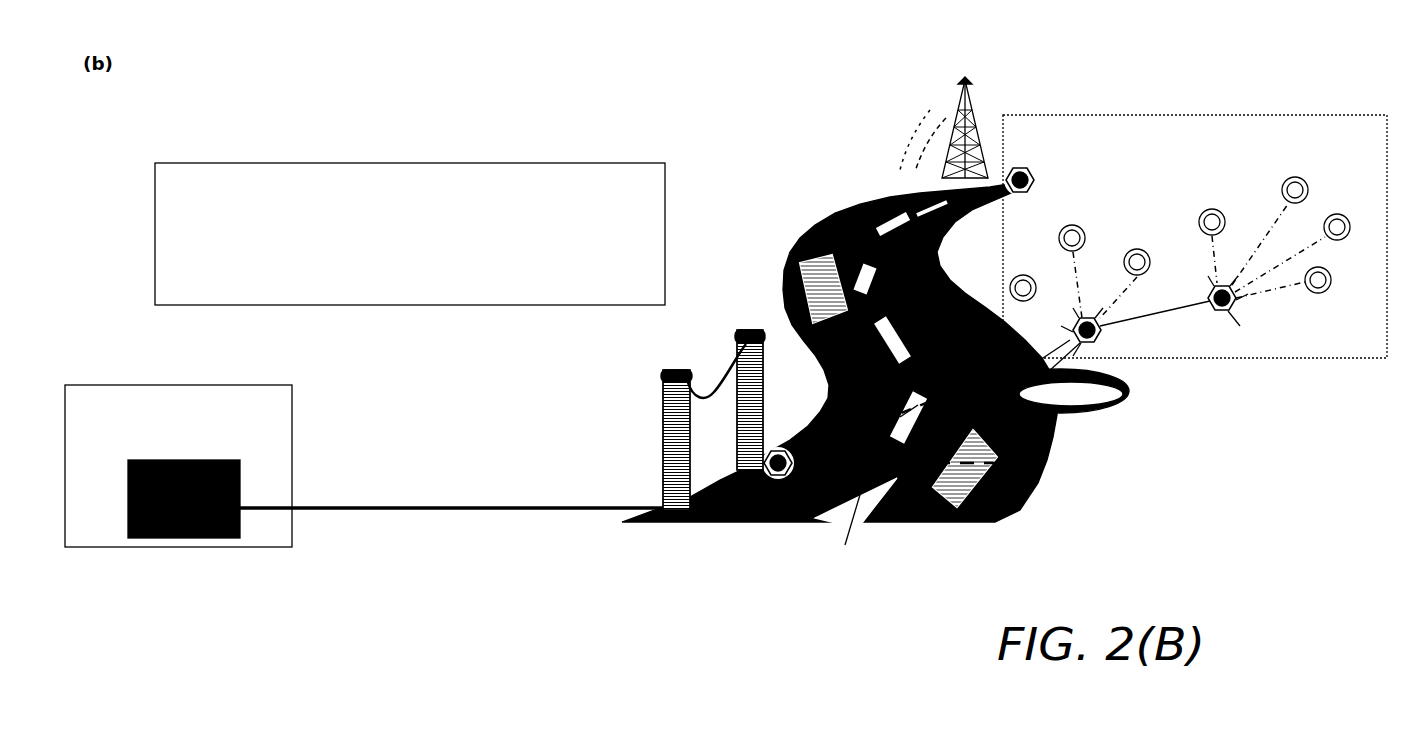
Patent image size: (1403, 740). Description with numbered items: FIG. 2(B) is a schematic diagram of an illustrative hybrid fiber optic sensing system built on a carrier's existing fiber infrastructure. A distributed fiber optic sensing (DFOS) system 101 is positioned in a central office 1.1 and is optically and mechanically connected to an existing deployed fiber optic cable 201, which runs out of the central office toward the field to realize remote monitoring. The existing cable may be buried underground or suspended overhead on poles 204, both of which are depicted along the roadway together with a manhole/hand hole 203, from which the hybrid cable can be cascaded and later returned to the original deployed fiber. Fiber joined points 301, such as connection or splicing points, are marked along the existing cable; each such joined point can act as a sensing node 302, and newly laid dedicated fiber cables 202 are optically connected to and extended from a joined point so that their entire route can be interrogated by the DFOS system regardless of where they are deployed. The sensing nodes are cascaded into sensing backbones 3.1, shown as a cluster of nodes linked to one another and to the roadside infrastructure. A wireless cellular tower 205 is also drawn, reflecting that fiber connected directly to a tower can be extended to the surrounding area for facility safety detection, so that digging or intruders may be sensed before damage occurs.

The central office 1.1 is at (178, 466).
The distributed fiber optic sensing (DFOS) system 101 is at (184, 499).
The existing deployed fiber optic cable 201 is at (170, 188).
The newly laid dedicated fiber cable 202 is at (170, 232).
The manhole/hand hole 203 is at (1110, 410).
The poles 204 is at (675, 420).
The cellular tower 205 is at (985, 112).
The fiber joined point 301 is at (608, 321).
The sensing node 302 is at (1210, 288).
The sensing backbones 3.1 is at (1195, 236).